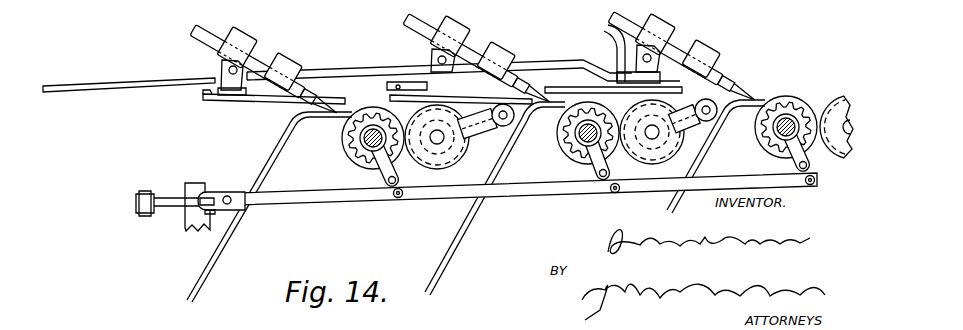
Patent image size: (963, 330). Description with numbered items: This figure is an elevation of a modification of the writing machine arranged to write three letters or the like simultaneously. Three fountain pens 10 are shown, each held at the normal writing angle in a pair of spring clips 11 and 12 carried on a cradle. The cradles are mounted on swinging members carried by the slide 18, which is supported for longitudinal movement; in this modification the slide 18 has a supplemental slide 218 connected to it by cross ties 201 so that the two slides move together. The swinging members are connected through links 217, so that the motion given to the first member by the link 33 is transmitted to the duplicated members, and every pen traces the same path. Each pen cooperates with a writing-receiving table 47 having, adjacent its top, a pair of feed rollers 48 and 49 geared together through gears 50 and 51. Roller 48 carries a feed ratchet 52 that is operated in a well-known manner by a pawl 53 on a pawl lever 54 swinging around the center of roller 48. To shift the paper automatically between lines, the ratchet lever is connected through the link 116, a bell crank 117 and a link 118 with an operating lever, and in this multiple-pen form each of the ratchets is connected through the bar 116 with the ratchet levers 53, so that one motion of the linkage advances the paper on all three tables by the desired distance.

The fountain pen 10 is at (272, 58).
The spring clip 11 is at (243, 40).
The spring clip 12 is at (300, 60).
The slide 18 is at (205, 100).
The link 33 is at (122, 83).
The table 47 is at (275, 142).
The feed roller 48 is at (347, 165).
The feed roller 49 is at (488, 165).
The gear 50 is at (512, 130).
The gear 51 is at (342, 124).
The feed ratchet 52 is at (345, 148).
The pawl 53 is at (380, 176).
The pawl lever 54 is at (448, 172).
The link 116 is at (303, 205).
The bell crank 117 is at (178, 194).
The link 118 is at (148, 212).
The cross tie 201 is at (600, 86).
The link 217 is at (355, 65).
The supplemental slide 218 is at (603, 30).